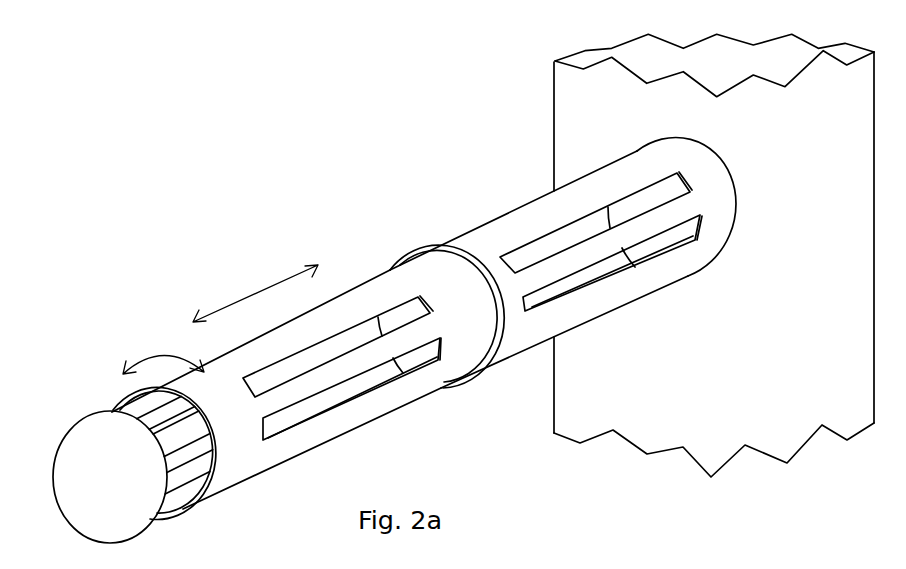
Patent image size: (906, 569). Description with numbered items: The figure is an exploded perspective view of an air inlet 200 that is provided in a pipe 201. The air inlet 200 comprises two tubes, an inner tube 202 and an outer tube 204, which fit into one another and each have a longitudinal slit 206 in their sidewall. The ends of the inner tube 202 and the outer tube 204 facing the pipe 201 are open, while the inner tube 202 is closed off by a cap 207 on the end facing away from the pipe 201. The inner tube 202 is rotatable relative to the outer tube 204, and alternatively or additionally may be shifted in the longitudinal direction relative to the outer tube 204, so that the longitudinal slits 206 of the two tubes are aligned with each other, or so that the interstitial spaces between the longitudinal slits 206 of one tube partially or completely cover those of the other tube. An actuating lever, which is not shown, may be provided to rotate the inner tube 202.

The air inlet 200 is at (493, 72).
The pipe 201 is at (790, 400).
The inner tube 202 is at (373, 412).
The outer tube 204 is at (665, 157).
The longitudinal slit 206 is at (617, 250).
The cap 207 is at (118, 486).